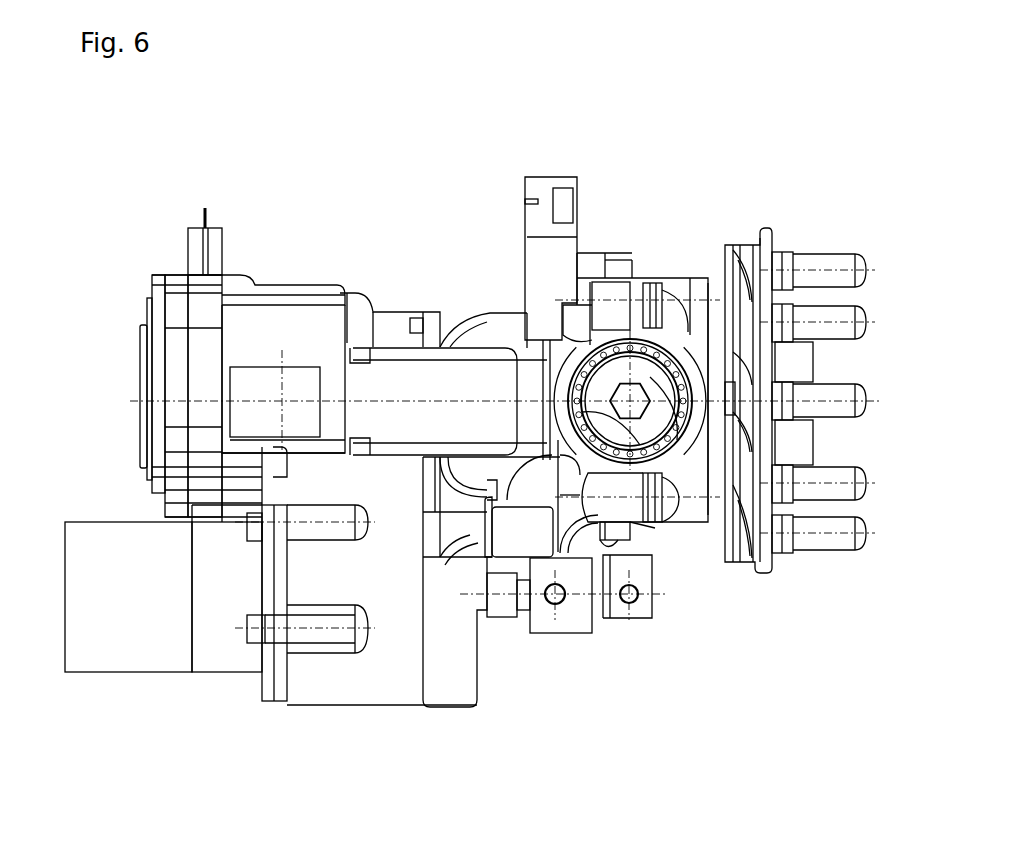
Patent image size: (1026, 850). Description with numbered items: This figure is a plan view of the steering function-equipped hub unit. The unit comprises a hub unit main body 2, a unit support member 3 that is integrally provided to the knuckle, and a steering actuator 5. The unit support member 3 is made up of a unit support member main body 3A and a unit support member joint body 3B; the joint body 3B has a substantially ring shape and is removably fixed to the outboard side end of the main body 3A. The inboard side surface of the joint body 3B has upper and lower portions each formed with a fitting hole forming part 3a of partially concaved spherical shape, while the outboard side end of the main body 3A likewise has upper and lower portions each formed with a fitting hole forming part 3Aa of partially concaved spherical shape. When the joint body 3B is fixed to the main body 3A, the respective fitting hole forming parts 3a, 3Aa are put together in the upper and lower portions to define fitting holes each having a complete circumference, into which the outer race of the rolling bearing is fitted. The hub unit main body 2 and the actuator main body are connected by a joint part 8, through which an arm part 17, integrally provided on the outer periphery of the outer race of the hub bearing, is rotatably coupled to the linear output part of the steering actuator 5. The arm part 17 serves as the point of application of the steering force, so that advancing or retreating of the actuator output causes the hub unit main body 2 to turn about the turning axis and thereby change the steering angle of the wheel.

The hub unit main body 2 is at (760, 212).
The unit support member 3 is at (590, 134).
The unit support member main body 3A is at (450, 378).
The unit support member joint body 3B is at (683, 322).
The fitting hole forming part 3a is at (657, 368).
The fitting hole forming part 3Aa is at (634, 432).
The steering actuator 5 is at (220, 625).
The joint part 8 is at (553, 623).
The arm part 17 is at (622, 612).